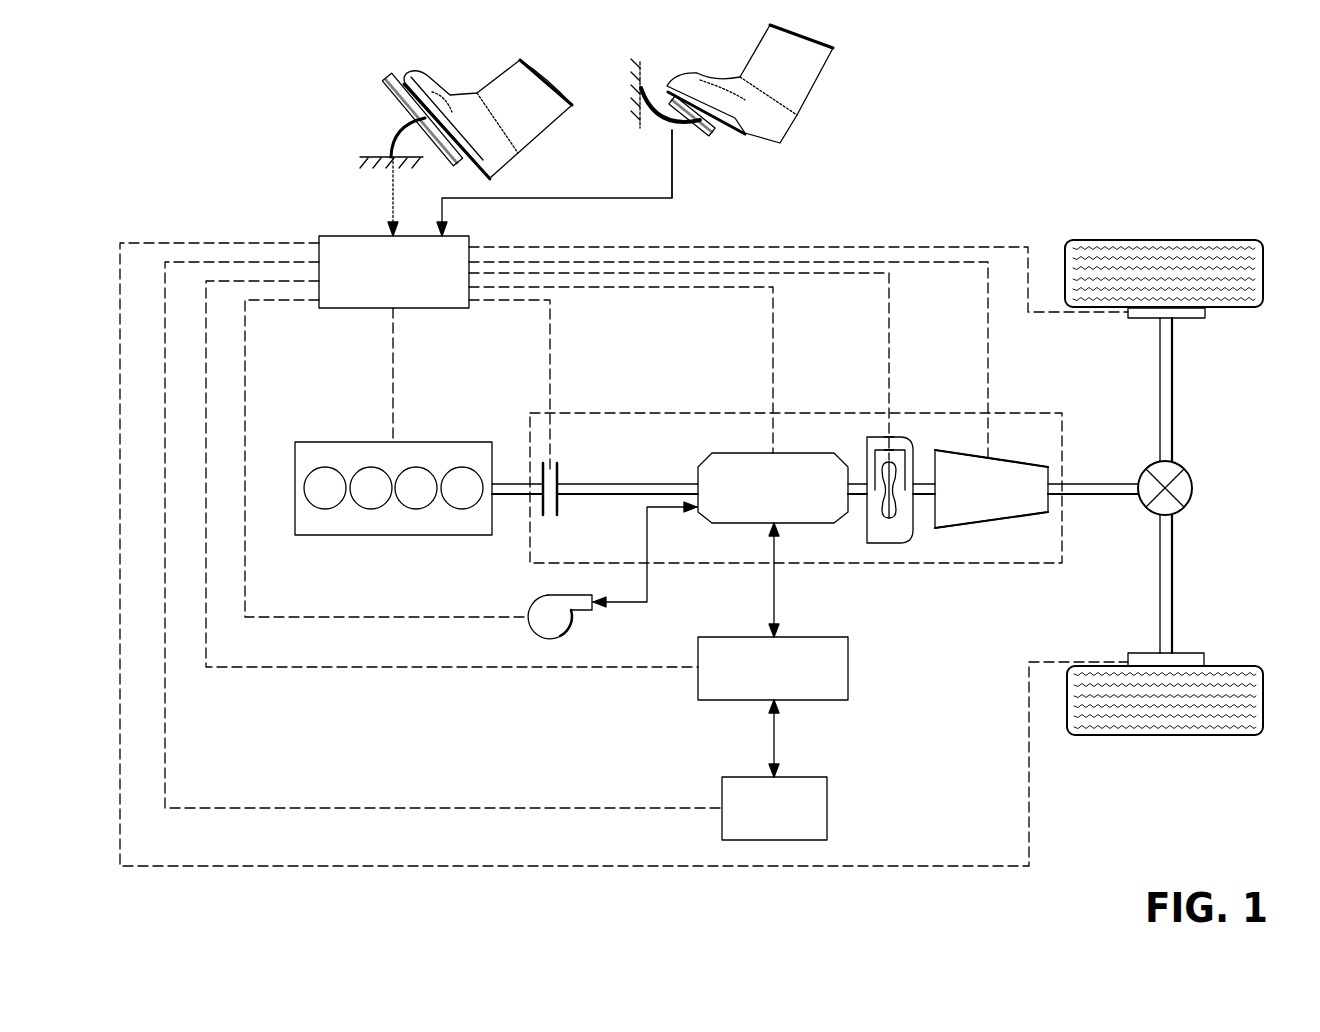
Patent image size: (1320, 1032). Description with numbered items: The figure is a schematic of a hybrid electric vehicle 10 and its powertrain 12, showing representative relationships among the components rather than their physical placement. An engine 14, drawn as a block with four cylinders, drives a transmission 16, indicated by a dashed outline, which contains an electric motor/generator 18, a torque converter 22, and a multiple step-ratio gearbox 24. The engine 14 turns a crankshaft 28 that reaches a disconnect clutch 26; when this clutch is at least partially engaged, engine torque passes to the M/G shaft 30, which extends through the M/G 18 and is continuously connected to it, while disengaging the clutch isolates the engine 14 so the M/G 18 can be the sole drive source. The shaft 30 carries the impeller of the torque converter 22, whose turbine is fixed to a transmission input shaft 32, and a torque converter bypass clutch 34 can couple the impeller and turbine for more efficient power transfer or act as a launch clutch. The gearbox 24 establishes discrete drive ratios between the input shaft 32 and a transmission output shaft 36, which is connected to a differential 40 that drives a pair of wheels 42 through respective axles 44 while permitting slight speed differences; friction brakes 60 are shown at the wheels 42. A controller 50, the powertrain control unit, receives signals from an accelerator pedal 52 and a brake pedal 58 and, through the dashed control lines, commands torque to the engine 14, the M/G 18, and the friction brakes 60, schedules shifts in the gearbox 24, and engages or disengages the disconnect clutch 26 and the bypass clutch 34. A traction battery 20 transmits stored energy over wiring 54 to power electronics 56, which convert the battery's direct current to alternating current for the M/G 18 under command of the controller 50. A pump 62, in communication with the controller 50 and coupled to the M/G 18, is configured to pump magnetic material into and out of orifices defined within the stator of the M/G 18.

The hybrid electric vehicle 10 is at (922, 155).
The powertrain 12 is at (530, 683).
The engine 14 is at (348, 441).
The transmission 16 is at (852, 412).
The electric motor/generator 18 is at (743, 452).
The traction battery 20 is at (828, 805).
The torque converter 22 is at (885, 547).
The gearbox 24 is at (990, 527).
The disconnect clutch 26 is at (560, 473).
The crankshaft 28 is at (522, 482).
The M/G shaft 30 is at (643, 483).
The transmission input shaft 32 is at (923, 477).
The torque converter bypass clutch 34 is at (890, 437).
The transmission output shaft 36 is at (1105, 483).
The differential 40 is at (1195, 490).
The wheels 42 is at (1167, 238).
The axles 44 is at (1173, 388).
The controller 50 is at (353, 236).
The accelerator pedal 52 is at (393, 110).
The wiring 54 is at (777, 745).
The power electronics 56 is at (848, 667).
The brake pedal 58 is at (710, 132).
The friction brakes 60 is at (1205, 313).
The pump 62 is at (530, 600).